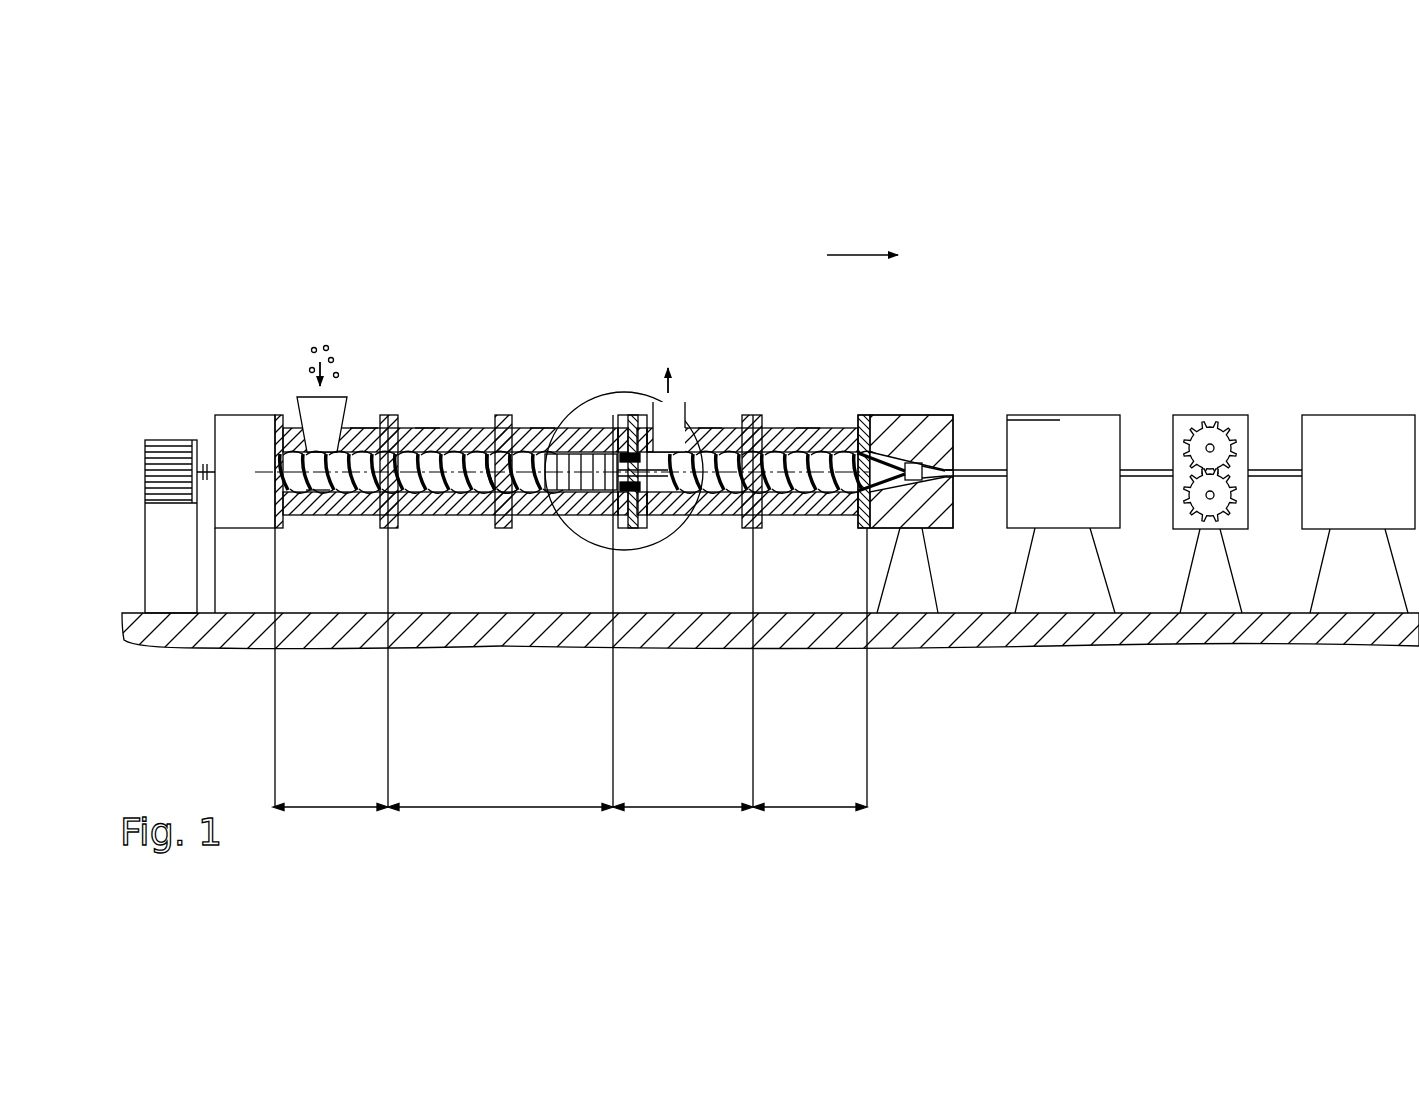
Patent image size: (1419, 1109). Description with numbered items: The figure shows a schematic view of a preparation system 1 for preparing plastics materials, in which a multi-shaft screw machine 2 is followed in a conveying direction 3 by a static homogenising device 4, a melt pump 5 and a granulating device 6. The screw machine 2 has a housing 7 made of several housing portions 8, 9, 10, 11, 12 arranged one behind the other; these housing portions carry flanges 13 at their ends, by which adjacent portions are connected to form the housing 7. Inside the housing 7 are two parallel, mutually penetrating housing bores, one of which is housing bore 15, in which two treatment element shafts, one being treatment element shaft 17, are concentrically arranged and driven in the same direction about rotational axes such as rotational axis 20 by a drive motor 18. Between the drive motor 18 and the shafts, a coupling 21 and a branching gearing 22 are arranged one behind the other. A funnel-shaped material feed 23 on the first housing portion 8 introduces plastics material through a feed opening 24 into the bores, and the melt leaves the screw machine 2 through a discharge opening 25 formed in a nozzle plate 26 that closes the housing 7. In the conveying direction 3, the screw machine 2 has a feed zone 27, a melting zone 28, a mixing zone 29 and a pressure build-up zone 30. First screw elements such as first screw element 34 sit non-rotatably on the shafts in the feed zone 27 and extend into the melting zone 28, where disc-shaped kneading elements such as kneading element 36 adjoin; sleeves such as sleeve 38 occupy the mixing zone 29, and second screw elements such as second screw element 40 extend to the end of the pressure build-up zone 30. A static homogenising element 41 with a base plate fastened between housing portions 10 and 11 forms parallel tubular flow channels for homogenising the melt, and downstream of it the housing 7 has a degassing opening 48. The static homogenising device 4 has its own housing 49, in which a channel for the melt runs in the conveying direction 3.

The preparation system 1 is at (729, 246).
The multi-shaft screw machine 2 is at (525, 337).
The conveying direction 3 is at (864, 253).
The static homogenising device 4 is at (1064, 411).
The melt pump 5 is at (1210, 411).
The granulating device 6 is at (1347, 411).
The housing 7 is at (472, 427).
The housing portion 8 is at (363, 428).
The housing portion 9 is at (428, 430).
The housing portion 10 is at (543, 428).
The housing portion 11 is at (710, 428).
The housing portion 12 is at (808, 428).
The flange 13 is at (757, 416).
The housing bore 15 is at (313, 490).
The treatment element shaft 17 is at (460, 487).
The drive motor 18 is at (163, 440).
The rotational axis 20 is at (503, 478).
The coupling 21 is at (204, 465).
The branching gearing 22 is at (238, 420).
The material feed 23 is at (337, 428).
The feed opening 24 is at (311, 435).
The discharge opening 25 is at (955, 472).
The nozzle plate 26 is at (903, 420).
The feed zone 27 is at (330, 613).
The melting zone 28 is at (500, 613).
The mixing zone 29 is at (683, 613).
The pressure build-up zone 30 is at (810, 669).
The first screw element 34 is at (492, 483).
The kneading element 36 is at (565, 480).
The sleeve 38 is at (653, 488).
The second screw element 40 is at (808, 492).
The homogenising element 41 is at (633, 412).
The degassing opening 48 is at (663, 428).
The housing 49 is at (1047, 418).